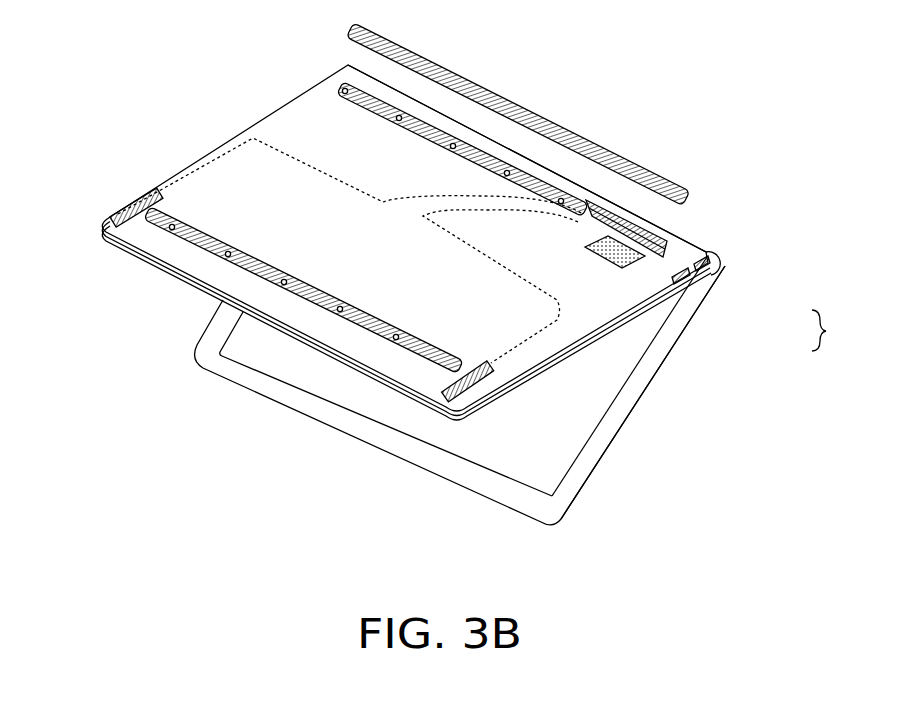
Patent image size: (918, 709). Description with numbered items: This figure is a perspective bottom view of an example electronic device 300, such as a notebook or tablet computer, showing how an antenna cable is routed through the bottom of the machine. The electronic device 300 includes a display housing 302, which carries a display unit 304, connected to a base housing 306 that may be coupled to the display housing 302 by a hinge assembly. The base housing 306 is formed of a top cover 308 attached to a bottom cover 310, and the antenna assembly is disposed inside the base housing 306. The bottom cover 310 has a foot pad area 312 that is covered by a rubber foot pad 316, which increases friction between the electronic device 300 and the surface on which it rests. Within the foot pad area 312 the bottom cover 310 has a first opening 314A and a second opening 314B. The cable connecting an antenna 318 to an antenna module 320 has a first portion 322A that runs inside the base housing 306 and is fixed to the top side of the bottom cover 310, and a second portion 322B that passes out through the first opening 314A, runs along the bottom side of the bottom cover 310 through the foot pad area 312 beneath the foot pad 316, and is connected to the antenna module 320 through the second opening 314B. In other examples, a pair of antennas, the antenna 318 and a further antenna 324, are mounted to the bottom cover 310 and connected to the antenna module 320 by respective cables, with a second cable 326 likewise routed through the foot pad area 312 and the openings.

The electronic device 300 is at (667, 562).
The display housing 302 is at (650, 403).
The display unit 304 is at (615, 368).
The base housing 306 is at (840, 330).
The top cover 308 is at (648, 303).
The bottom cover 310 is at (605, 330).
The foot pad area 312 is at (346, 104).
The first opening 314A is at (581, 188).
The second opening 314B is at (653, 226).
The foot pad 316 is at (350, 62).
The antenna 318 is at (607, 418).
The antenna module 320 is at (728, 263).
The first portion 322A is at (513, 207).
The second portion 322B is at (585, 232).
The antenna 324 is at (110, 213).
The cable 326 is at (190, 174).